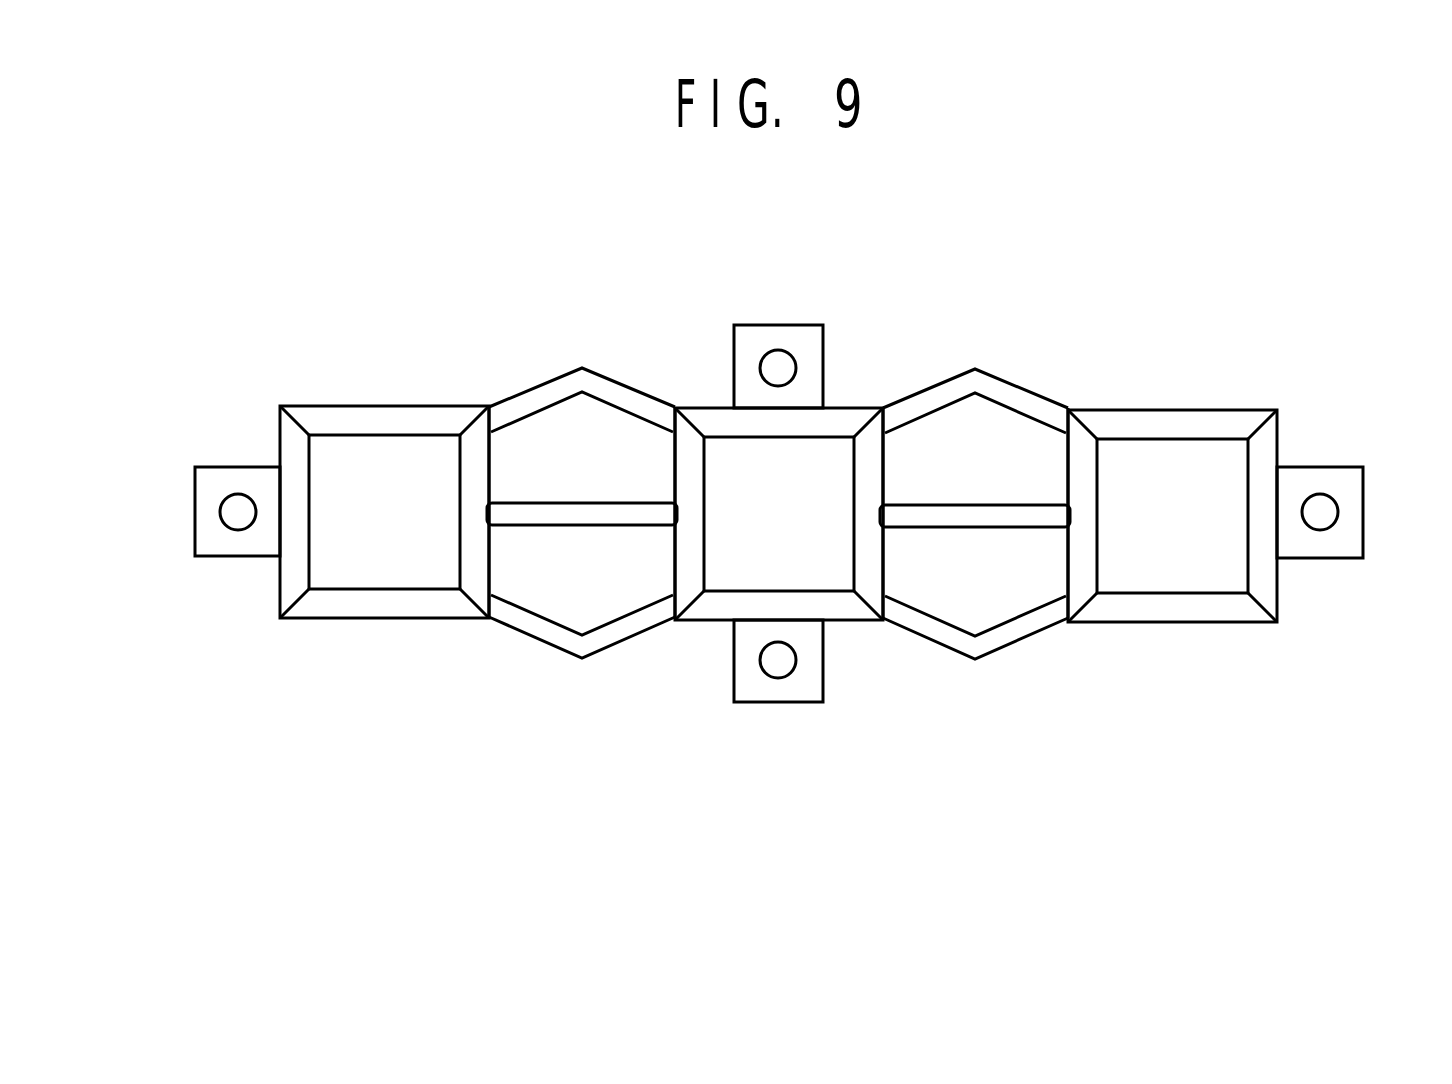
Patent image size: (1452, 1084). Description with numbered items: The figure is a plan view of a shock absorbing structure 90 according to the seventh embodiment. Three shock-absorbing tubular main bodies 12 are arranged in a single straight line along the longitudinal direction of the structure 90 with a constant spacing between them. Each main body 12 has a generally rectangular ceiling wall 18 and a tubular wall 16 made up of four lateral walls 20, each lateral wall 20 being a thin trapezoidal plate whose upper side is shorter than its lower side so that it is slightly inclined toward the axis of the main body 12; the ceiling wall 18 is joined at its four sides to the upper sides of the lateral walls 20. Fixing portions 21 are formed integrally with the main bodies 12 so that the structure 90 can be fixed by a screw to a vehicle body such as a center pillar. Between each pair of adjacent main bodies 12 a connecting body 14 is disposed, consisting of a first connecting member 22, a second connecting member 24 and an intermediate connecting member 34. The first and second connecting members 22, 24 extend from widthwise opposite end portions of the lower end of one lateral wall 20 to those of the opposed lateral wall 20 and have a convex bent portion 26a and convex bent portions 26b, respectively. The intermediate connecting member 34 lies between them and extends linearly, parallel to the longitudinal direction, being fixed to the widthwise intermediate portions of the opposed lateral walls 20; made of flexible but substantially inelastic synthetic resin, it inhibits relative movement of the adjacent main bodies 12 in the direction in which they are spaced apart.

The shock absorbing structure 90 is at (240, 348).
The shock-absorbing tubular main body 12 is at (273, 662).
The connecting body 14 is at (768, 540).
The tubular wall 16 is at (417, 643).
The ceiling wall 18 is at (338, 450).
The lateral wall 20 is at (357, 417).
The fixing portion 21 is at (210, 477).
The first connecting member 22 is at (530, 398).
The second connecting member 24 is at (538, 630).
The convex bent portion 26a is at (585, 380).
The convex bent portion 26b is at (595, 652).
The intermediate connecting member 34 is at (522, 518).